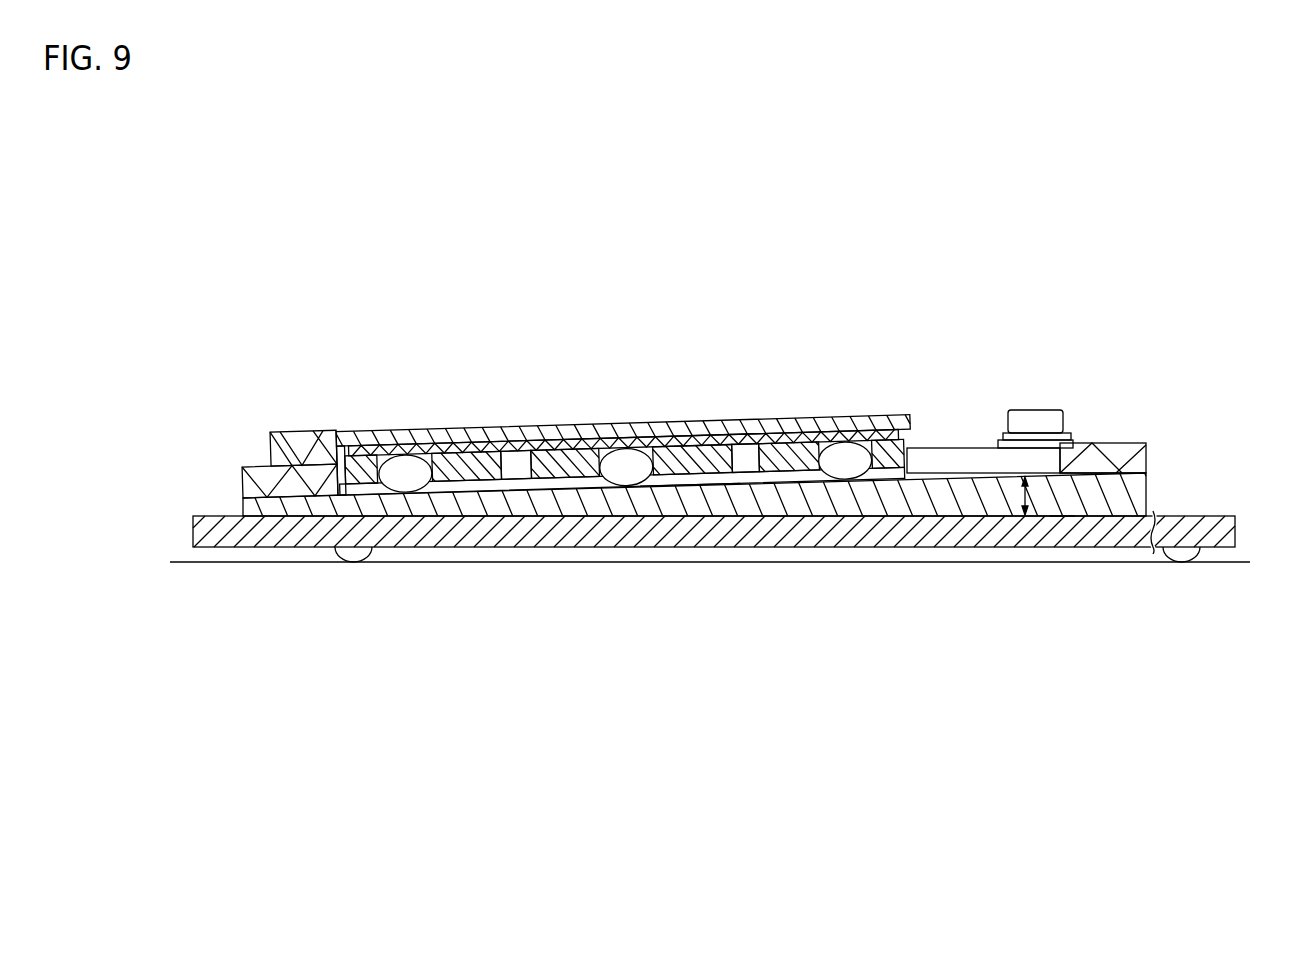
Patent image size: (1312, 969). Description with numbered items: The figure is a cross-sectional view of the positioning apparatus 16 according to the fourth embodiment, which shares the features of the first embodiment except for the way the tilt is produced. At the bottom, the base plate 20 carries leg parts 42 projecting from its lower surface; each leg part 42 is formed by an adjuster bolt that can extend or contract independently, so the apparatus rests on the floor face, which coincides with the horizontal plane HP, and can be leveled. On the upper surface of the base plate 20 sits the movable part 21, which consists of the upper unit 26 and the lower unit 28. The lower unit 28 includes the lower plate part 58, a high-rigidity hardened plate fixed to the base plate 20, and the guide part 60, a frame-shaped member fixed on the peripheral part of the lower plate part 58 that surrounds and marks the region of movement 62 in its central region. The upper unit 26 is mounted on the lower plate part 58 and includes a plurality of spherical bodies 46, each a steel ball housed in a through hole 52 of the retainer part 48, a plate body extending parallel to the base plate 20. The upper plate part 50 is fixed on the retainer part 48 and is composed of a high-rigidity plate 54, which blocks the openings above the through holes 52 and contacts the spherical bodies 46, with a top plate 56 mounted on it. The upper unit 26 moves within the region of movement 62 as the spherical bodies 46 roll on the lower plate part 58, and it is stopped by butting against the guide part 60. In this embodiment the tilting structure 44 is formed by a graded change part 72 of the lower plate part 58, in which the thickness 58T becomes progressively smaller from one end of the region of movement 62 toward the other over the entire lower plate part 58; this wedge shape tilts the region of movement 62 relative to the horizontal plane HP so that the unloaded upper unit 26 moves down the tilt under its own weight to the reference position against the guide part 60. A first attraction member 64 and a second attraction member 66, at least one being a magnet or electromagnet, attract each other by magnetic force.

The positioning apparatus 16 is at (1218, 444).
The base plate 20 is at (1234, 532).
The movable part 21 is at (1135, 333).
The upper unit 26 is at (906, 402).
The lower unit 28 is at (1095, 414).
The leg part 42 is at (372, 552).
The tilting structure 44 is at (1062, 512).
The spherical body 46 is at (842, 478).
The retainer part 48 is at (912, 457).
The upper plate part 50 is at (687, 333).
The through hole 52 is at (825, 462).
The high-rigidity plate 54 is at (800, 440).
The top plate 56 is at (723, 423).
The lower plate part 58 is at (734, 541).
The thickness of the lower plate part 58T is at (1043, 508).
The guide part 60 is at (1150, 450).
The region of movement 62 is at (980, 466).
The first attraction member 64 is at (304, 432).
The second attraction member 66 is at (365, 432).
The graded change part 72 is at (690, 502).
The horizontal plane HP is at (1243, 563).